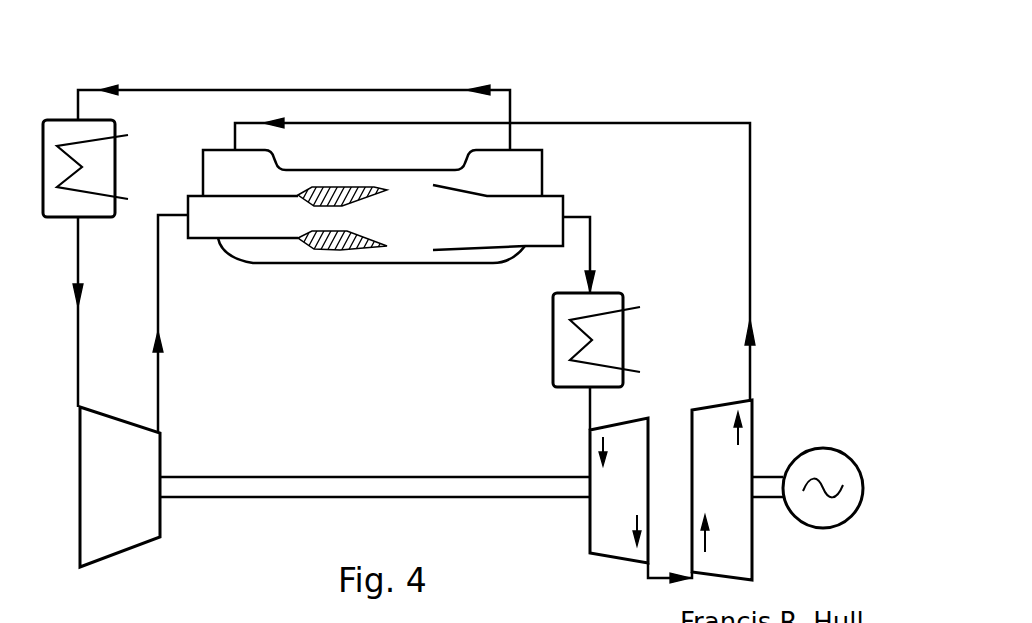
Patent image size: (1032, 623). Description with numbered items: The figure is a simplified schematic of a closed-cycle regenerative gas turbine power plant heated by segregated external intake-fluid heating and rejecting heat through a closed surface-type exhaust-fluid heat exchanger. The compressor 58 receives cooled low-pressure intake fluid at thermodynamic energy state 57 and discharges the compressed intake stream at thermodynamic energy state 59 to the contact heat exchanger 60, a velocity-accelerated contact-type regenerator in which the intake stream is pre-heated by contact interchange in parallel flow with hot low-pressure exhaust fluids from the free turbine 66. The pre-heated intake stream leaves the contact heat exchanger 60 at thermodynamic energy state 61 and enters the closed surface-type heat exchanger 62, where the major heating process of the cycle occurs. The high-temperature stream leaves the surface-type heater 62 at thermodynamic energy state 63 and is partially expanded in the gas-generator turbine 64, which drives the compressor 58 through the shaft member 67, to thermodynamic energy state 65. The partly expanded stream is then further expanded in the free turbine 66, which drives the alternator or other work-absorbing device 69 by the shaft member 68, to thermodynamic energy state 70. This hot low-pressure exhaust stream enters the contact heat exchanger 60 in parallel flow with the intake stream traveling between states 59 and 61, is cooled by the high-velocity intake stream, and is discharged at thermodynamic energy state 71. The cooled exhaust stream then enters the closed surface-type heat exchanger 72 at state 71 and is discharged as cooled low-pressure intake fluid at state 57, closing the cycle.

The thermodynamic energy state of cooled low-pressure intake fluid 57 is at (85, 387).
The compressor 58 is at (137, 501).
The thermodynamic energy state of compressed intake fluid 59 is at (153, 415).
The contact heat exchanger 60 is at (408, 260).
The thermodynamic energy state of pre-heated intake fluid 61 is at (595, 257).
The closed surface-type heat exchanger 62 is at (617, 348).
The thermodynamic energy state of high-temperature intake fluid 63 is at (597, 410).
The gas-generator turbine 64 is at (632, 501).
The thermodynamic energy state of partly expanded intake fluid 65 is at (663, 572).
The free turbine 66 is at (735, 501).
The shaft member 67 is at (345, 476).
The shaft member 68 is at (770, 480).
The alternator or other work-absorbing device 69 is at (830, 453).
The thermodynamic energy state of hot low-pressure exhaust fluid 70 is at (233, 138).
The thermodynamic energy state of cooled exhaust fluid 71 is at (120, 97).
The closed surface-type heat exchanger 72 is at (105, 174).